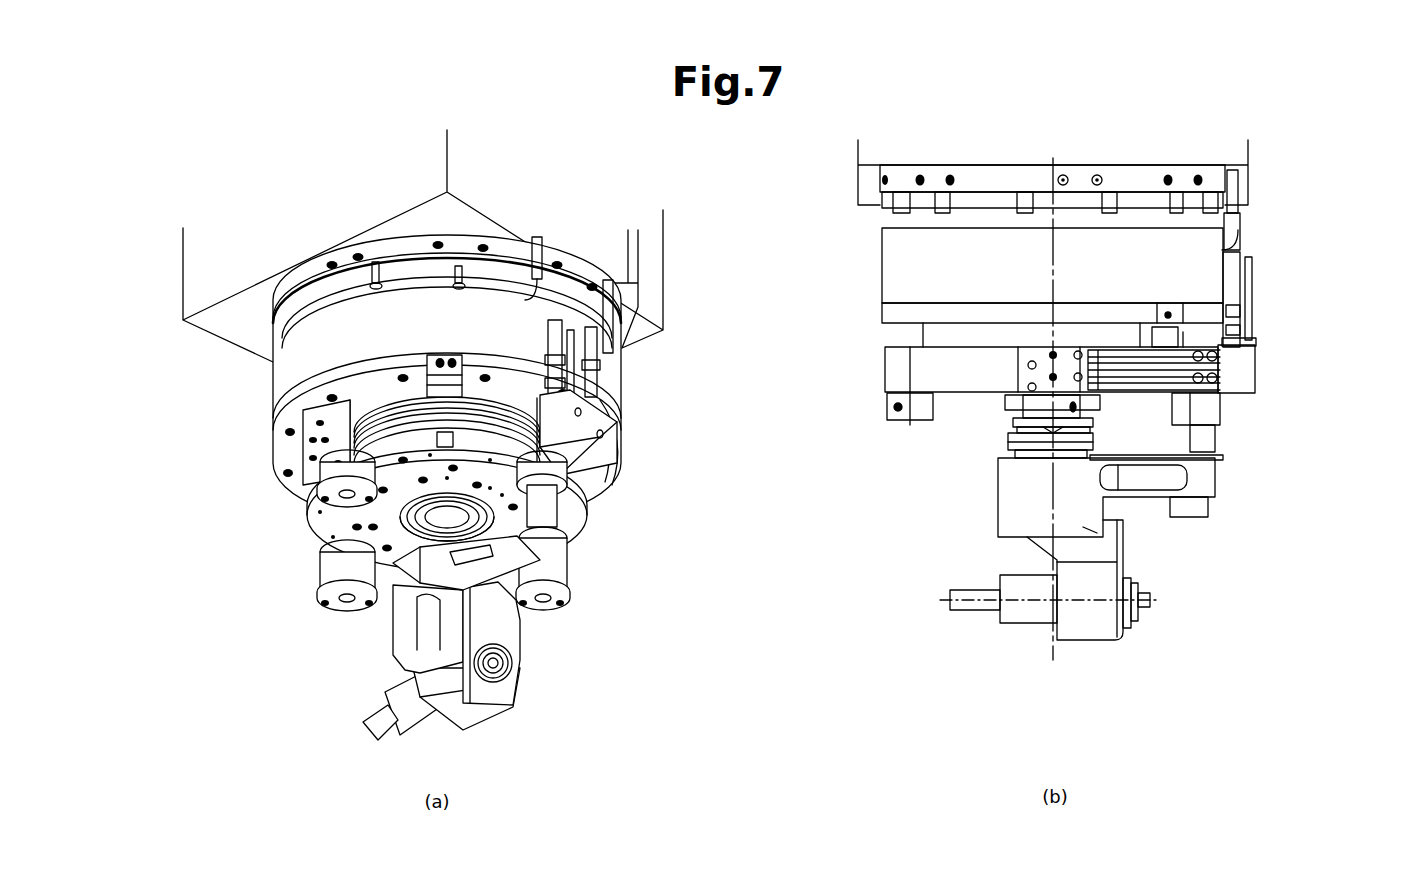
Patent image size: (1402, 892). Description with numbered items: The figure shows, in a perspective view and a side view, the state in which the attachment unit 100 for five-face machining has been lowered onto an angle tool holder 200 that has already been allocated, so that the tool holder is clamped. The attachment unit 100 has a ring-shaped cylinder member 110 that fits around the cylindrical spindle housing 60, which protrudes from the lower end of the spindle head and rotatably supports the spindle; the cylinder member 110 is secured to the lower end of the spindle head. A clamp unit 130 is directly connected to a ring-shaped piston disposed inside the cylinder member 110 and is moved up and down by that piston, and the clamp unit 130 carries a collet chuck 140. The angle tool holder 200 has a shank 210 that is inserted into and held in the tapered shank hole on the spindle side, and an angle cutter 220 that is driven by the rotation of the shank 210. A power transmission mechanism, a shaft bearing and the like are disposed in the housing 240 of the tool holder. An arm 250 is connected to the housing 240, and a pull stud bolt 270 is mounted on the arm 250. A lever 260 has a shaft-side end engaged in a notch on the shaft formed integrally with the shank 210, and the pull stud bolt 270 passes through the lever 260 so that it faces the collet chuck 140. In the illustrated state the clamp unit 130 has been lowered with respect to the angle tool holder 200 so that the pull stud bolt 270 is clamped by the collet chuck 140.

The spindle housing 60 is at (347, 520).
The attachment unit 100 is at (198, 437).
The ring-shaped cylinder member 110 is at (303, 362).
The clamp unit 130 is at (327, 443).
The collet chuck 140 is at (557, 468).
The angle tool holder 200 is at (649, 643).
The shank 210 is at (1008, 437).
The angle cutter 220 is at (370, 716).
The housing 240 is at (508, 632).
The arm 250 is at (500, 585).
The lever 260 is at (557, 537).
The pull stud bolt 270 is at (547, 500).